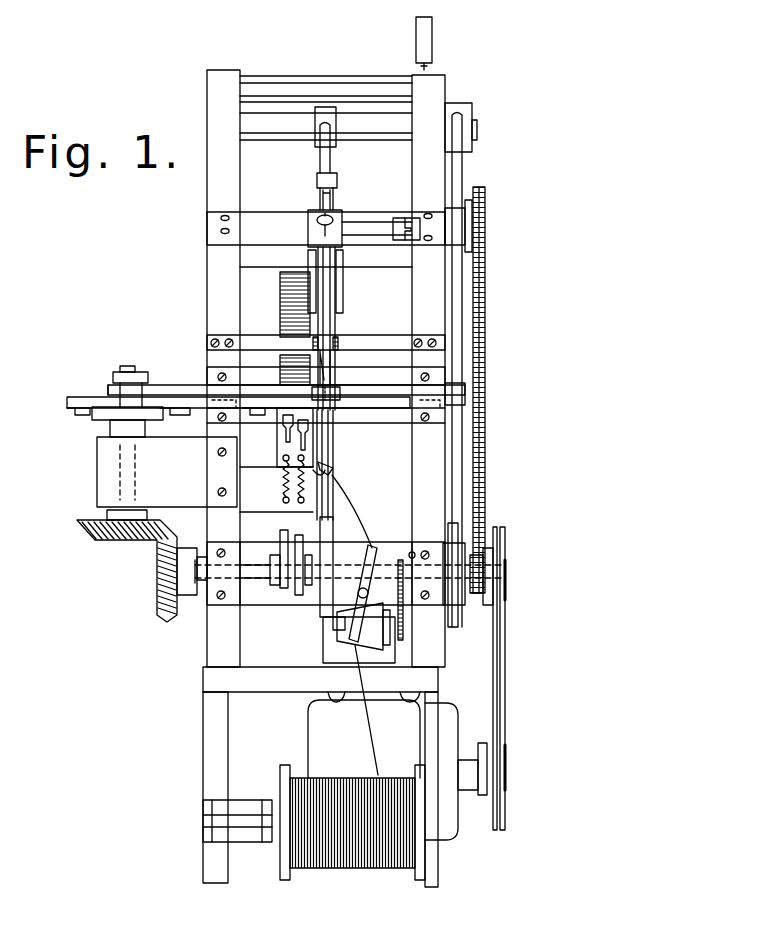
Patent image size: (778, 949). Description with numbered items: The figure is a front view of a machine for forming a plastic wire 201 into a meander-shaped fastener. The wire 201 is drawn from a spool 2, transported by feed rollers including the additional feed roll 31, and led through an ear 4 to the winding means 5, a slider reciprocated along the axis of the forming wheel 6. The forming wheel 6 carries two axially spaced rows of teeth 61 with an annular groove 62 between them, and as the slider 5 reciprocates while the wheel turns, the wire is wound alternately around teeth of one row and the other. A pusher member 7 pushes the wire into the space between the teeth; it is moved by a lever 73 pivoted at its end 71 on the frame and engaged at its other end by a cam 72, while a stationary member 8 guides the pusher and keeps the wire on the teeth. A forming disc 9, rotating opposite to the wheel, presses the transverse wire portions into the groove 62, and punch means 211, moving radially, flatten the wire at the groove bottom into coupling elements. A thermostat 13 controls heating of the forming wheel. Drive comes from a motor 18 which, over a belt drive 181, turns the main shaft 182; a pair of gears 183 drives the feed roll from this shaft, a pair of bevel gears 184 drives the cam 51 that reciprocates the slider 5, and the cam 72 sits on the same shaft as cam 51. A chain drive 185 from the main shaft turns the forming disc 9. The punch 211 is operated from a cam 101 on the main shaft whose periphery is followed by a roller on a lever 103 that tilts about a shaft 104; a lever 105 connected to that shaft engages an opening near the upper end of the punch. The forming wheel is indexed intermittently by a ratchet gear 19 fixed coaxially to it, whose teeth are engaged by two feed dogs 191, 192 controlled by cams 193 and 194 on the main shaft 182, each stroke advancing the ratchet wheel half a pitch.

The spool 2 is at (287, 880).
The ear 4 is at (330, 476).
The winding means (slider) 5 is at (340, 413).
The forming wheel 6 is at (333, 465).
The pusher member 7 is at (333, 395).
The stationary member 8 is at (325, 368).
The forming disc 9 is at (333, 275).
The thermostat 13 is at (432, 40).
The motor 18 is at (320, 730).
The ratchet gear 19 is at (282, 293).
The feed roll 31 is at (350, 620).
The cam 51 is at (95, 418).
The row of teeth 61 is at (333, 438).
The annular groove 62 is at (330, 452).
The end of lever 71 is at (470, 392).
The cam (eccentric) 72 is at (100, 395).
The lever 73 is at (190, 385).
The cam 101 is at (455, 530).
The lever 103 is at (455, 338).
The shaft 104 is at (395, 120).
The lever 105 is at (322, 157).
The belt drive 181 is at (503, 655).
The main shaft 182 is at (247, 580).
The pair of gears 183 is at (403, 610).
The pair of bevel gears 184 is at (157, 545).
The chain drive 185 is at (483, 295).
The feed dog 191 is at (280, 425).
The feed dog 192 is at (282, 440).
The cam 193 is at (280, 553).
The cam 194 is at (298, 592).
The wire 201 is at (377, 740).
The punch means 211 is at (337, 180).